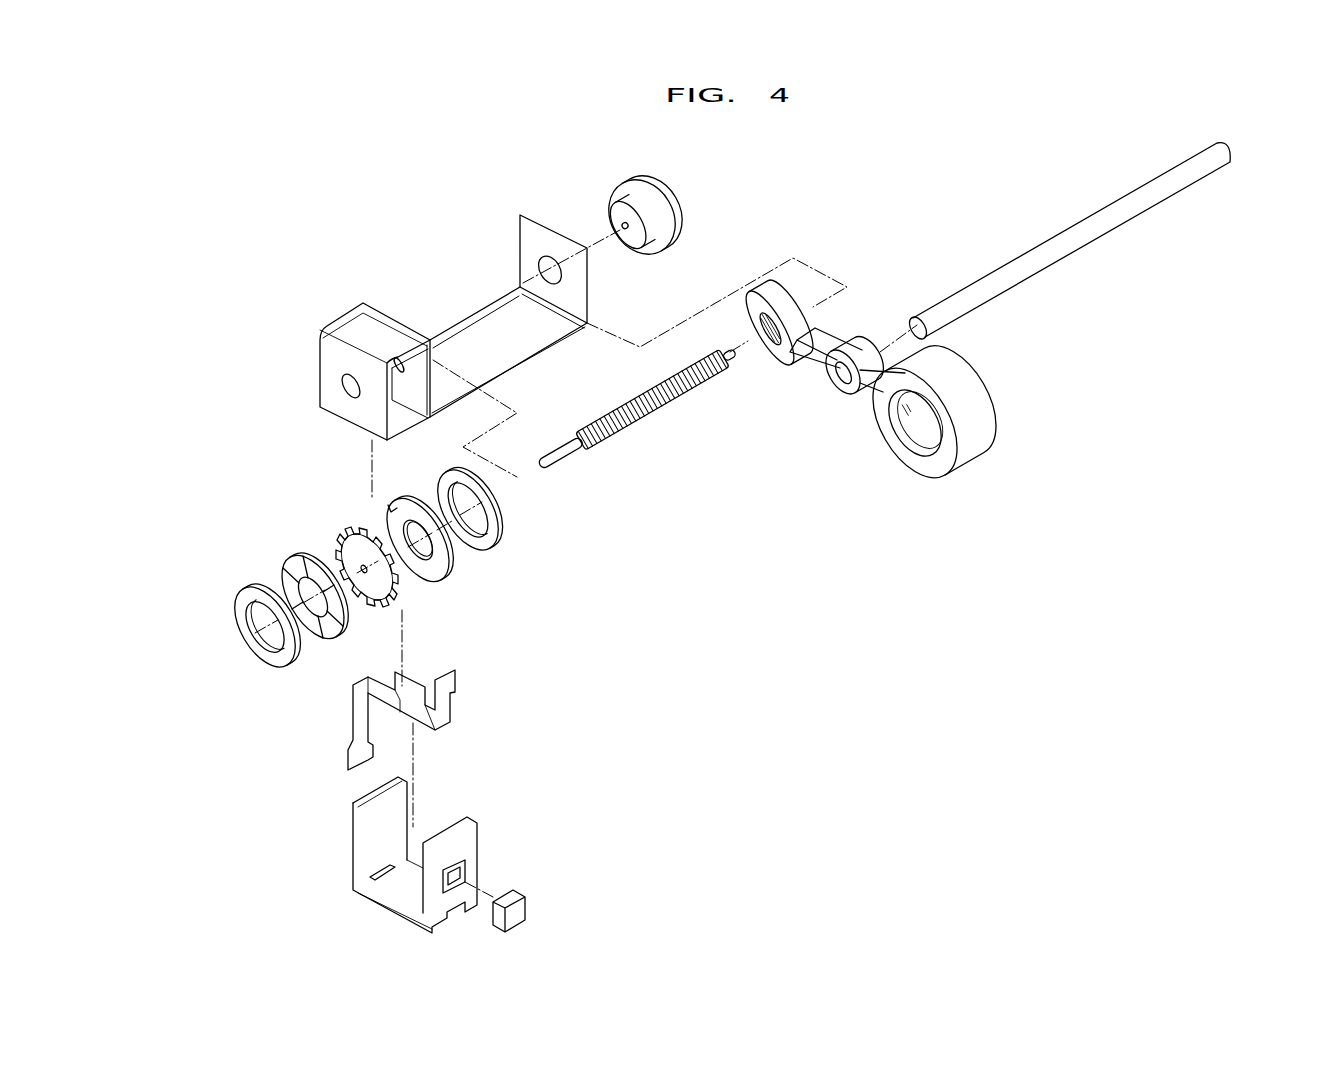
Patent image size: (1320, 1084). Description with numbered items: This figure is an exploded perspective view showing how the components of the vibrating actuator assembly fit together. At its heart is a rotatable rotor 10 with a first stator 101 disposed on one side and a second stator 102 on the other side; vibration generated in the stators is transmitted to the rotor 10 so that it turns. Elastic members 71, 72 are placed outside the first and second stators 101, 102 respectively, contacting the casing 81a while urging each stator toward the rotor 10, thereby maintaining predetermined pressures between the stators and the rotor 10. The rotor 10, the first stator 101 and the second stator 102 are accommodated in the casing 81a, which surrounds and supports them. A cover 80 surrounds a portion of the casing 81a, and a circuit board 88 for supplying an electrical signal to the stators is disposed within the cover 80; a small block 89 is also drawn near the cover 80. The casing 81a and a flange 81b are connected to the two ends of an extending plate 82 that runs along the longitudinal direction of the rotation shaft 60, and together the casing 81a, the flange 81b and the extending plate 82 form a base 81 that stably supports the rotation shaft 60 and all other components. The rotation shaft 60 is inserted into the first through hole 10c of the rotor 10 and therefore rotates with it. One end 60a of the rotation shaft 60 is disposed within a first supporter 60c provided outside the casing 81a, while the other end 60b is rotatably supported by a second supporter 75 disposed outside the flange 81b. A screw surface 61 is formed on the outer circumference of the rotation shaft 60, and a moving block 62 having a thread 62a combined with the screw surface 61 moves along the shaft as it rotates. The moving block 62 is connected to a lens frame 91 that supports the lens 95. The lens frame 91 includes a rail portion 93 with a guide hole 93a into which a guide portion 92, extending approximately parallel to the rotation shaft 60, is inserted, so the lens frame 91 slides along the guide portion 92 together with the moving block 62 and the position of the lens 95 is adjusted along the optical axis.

The rotor 10 is at (392, 568).
The first through hole 10c is at (347, 532).
The rotation shaft 60 is at (657, 436).
The one end of the rotation shaft 60a is at (560, 460).
The other end of the rotation shaft 60b is at (741, 390).
The first supporter 60c is at (345, 386).
The screw surface 61 is at (665, 410).
The moving block 62 is at (776, 352).
The thread 62a is at (773, 348).
The elastic member 71 is at (237, 627).
The elastic member 72 is at (493, 540).
The second supporter 75 is at (657, 212).
The cover 80 is at (353, 853).
The base 81 is at (450, 301).
The casing 81a is at (352, 312).
The flange 81b is at (531, 214).
The extending plate 82 is at (474, 320).
The circuit board 88 is at (350, 758).
The block 89 is at (525, 908).
The lens frame 91 is at (939, 431).
The guide portion 92 is at (1147, 190).
The rail portion 93 is at (842, 359).
The guide hole 93a is at (842, 378).
The lens 95 is at (918, 437).
The first stator 101 is at (282, 557).
The second stator 102 is at (453, 582).